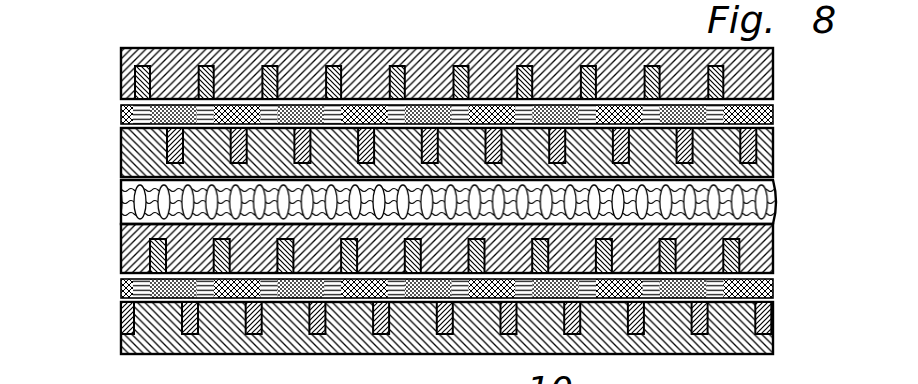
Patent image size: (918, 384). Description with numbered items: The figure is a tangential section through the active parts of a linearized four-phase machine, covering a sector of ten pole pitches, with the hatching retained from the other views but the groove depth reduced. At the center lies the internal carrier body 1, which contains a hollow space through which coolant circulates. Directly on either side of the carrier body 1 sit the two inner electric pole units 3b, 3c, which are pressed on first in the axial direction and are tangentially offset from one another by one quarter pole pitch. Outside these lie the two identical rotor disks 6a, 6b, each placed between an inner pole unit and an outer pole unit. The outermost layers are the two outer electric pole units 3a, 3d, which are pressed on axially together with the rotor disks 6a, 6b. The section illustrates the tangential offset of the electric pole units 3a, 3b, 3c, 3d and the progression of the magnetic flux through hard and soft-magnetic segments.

The outer electric pole unit 3a is at (107, 75).
The rotor disk 6a is at (108, 115).
The inner electric pole unit 3b is at (106, 152).
The internal carrier body 1 is at (108, 200).
The inner electric pole unit 3c is at (106, 249).
The rotor disk 6b is at (108, 286).
The outer electric pole unit 3d is at (107, 325).